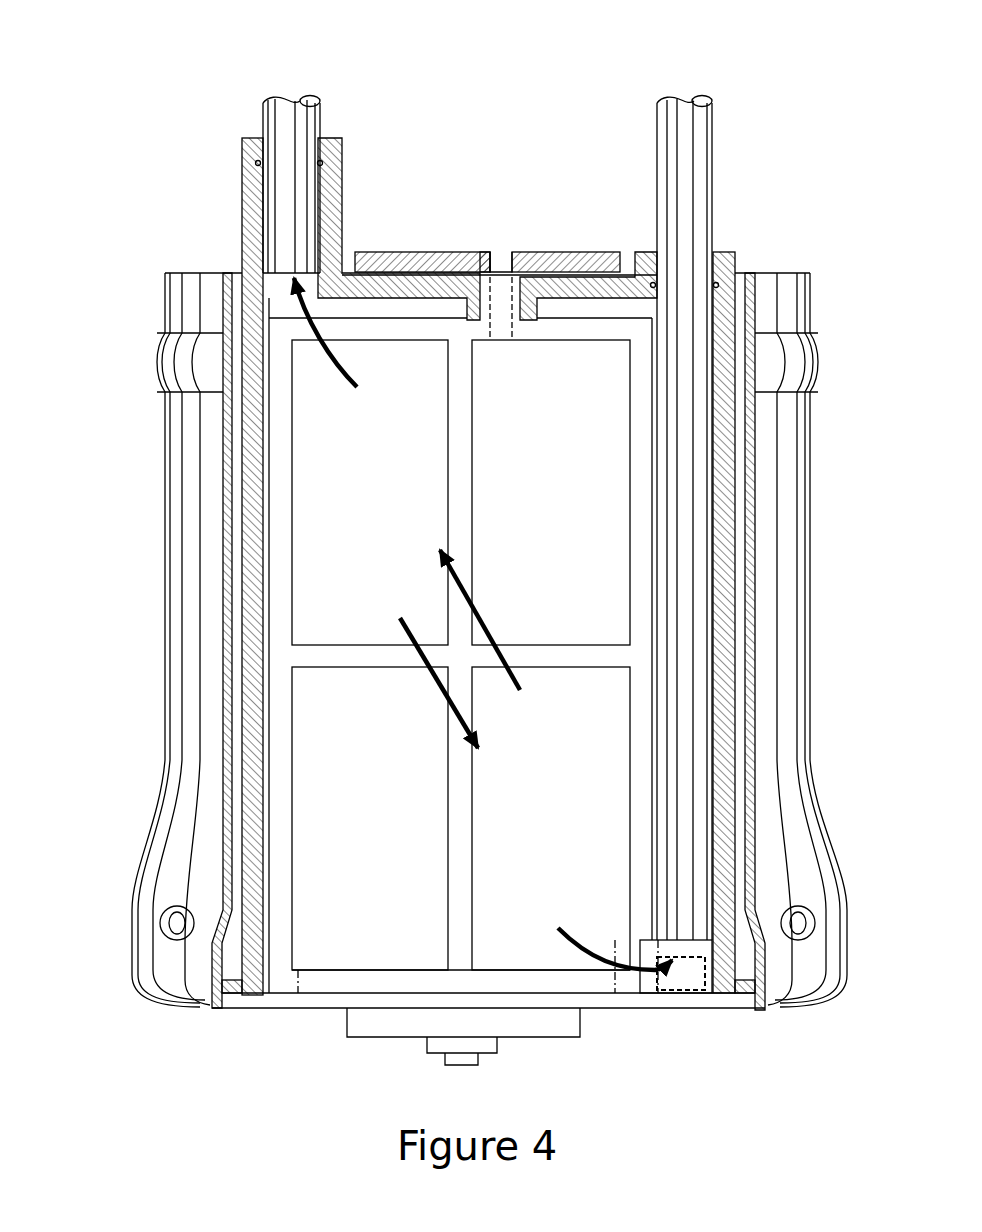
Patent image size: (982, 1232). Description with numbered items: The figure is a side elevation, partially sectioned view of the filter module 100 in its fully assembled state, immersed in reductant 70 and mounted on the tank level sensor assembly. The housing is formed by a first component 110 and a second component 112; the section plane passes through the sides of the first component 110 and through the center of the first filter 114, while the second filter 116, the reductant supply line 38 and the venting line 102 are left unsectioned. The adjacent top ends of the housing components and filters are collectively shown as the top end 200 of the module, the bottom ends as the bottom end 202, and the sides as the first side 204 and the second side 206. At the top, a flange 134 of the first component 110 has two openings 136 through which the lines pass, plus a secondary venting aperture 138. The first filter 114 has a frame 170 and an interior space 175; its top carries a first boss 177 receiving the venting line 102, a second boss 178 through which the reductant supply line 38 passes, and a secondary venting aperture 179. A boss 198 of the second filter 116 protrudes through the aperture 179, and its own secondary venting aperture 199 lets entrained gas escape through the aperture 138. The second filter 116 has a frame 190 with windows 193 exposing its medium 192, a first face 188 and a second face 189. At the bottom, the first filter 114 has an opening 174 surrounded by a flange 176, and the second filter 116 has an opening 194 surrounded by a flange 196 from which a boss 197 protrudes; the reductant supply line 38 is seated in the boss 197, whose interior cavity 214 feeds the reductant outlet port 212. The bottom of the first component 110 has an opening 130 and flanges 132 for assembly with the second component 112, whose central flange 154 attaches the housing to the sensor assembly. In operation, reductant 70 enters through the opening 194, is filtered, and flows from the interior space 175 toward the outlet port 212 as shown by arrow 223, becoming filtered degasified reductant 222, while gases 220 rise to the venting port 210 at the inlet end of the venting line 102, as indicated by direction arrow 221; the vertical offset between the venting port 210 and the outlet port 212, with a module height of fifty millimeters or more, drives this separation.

The filter module 100 is at (808, 40).
The venting line 102 is at (328, 100).
The reductant supply line 38 is at (740, 180).
The first boss 177 is at (240, 170).
The first filter 114 is at (200, 200).
The second filter 116 is at (375, 295).
The secondary venting aperture 138 is at (488, 252).
The top end 200 is at (515, 240).
The flange 134 is at (565, 250).
The openings 136 is at (360, 270).
The second boss 178 is at (740, 268).
The venting port 210 is at (277, 275).
The interior space 175 is at (368, 308).
The secondary venting aperture 179 is at (480, 318).
The boss 198 is at (520, 298).
The secondary venting aperture 199 is at (508, 342).
The direction arrow 221 is at (347, 382).
The frame 170 is at (248, 470).
The first component 110 is at (850, 430).
The windows 193 is at (292, 500).
The first side 204 is at (125, 597).
The gases 220 is at (485, 625).
The second side 206 is at (820, 608).
The filtered degasified reductant 222 is at (440, 682).
The first face 188 is at (276, 710).
The second face 189 is at (265, 775).
The medium 192 is at (461, 818).
The frame 190 is at (240, 875).
The boss 197 is at (640, 943).
The reductant flow arrow 223 is at (560, 953).
The reductant outlet port 212 is at (707, 975).
The flanges 132 is at (150, 1003).
The opening 130 is at (225, 972).
The bottom end 202 is at (462, 1006).
The flange 196 is at (700, 1010).
The reductant 70 is at (452, 1047).
The opening 174 is at (265, 970).
The second component 112 is at (335, 1078).
The central flange 154 is at (532, 1040).
The opening 194 is at (605, 990).
The interior cavity 214 is at (677, 993).
The flange 176 is at (762, 978).